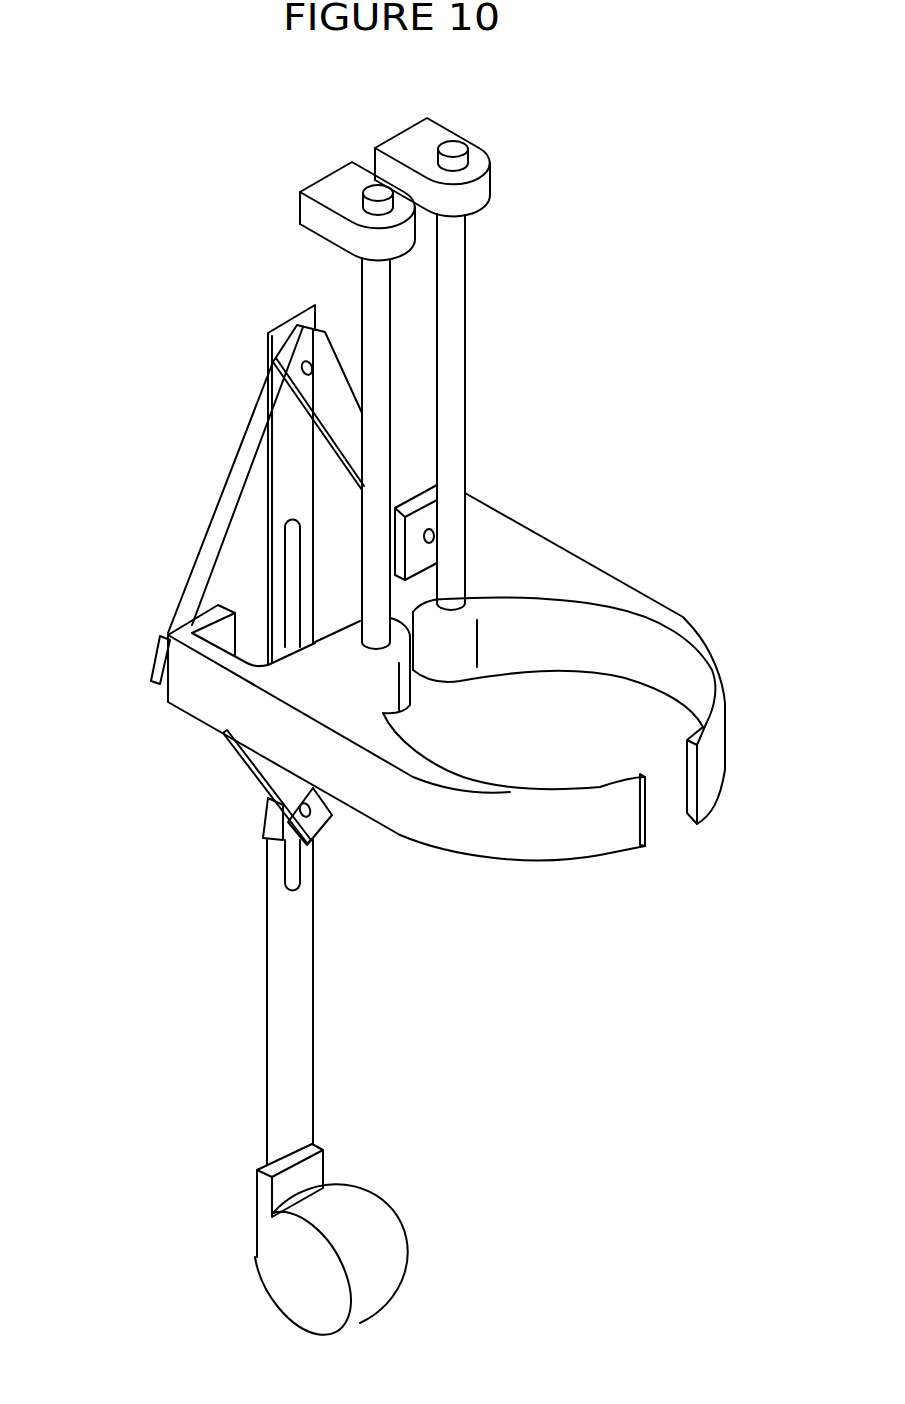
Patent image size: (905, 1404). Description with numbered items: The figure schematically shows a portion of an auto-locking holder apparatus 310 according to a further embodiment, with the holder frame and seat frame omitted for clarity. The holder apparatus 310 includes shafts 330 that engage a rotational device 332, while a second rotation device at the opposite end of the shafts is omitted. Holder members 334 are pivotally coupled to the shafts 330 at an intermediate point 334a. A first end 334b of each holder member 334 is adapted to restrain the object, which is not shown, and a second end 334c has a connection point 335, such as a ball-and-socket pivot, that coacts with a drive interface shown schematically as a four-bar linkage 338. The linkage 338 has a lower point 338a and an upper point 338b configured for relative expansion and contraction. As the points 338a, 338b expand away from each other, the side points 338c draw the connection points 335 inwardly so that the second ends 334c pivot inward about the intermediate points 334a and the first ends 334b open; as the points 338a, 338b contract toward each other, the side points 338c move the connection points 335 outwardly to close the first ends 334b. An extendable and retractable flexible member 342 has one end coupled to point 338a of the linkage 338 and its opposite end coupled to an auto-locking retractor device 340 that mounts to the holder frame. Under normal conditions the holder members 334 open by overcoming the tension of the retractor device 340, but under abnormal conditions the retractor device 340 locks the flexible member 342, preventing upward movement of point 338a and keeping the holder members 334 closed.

The auto-locking holder apparatus 310 is at (632, 377).
The shafts 330 is at (373, 283).
The rotational device 332 is at (348, 203).
The holder members 334 is at (657, 590).
The intermediate point 334a is at (530, 555).
The first end 334b is at (627, 835).
The second end 334c is at (433, 517).
The connection point 335 is at (480, 530).
The four-bar linkage 338 is at (227, 482).
The lower point 338a is at (300, 362).
The upper point 338b is at (300, 805).
The side points 338c is at (403, 493).
The auto-locking retractor device 340 is at (378, 1235).
The flexible member 342 is at (300, 1024).